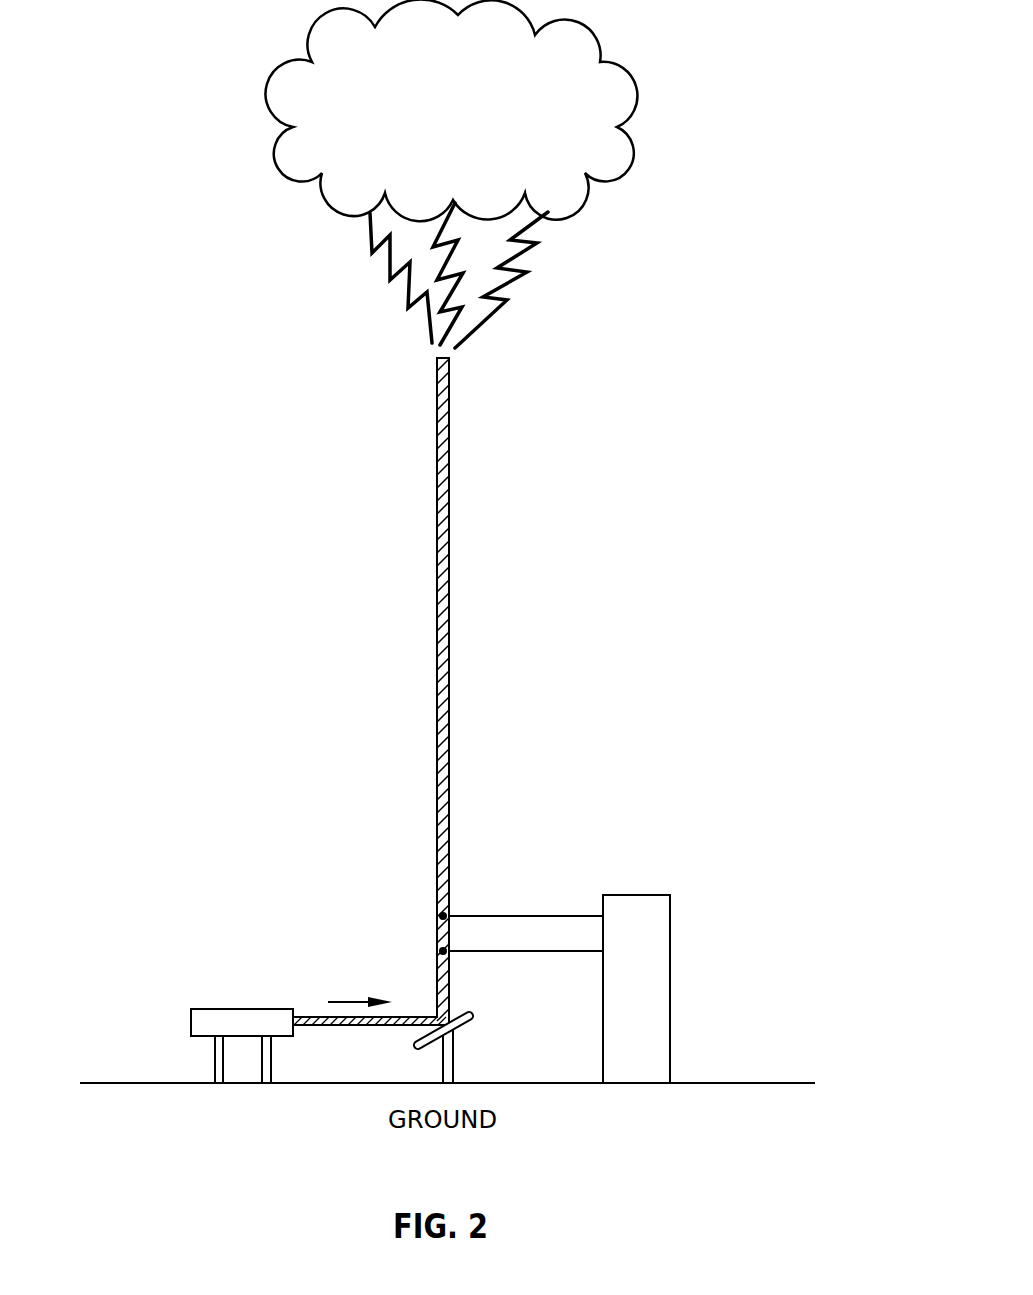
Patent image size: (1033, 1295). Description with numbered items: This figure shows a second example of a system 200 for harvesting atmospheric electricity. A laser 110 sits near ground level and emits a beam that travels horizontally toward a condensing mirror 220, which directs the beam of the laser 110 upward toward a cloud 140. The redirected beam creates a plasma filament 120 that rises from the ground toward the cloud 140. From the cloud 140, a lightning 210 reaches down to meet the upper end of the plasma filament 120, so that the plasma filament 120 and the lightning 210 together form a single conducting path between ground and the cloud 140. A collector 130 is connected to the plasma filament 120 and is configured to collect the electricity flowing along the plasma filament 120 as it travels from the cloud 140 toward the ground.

The laser 110 is at (192, 1018).
The plasma filament 120 is at (449, 746).
The collector 130 is at (657, 990).
The cloud 140 is at (478, 107).
The system 200 is at (693, 669).
The lightning 210 is at (507, 287).
The condensing mirror 220 is at (462, 1022).